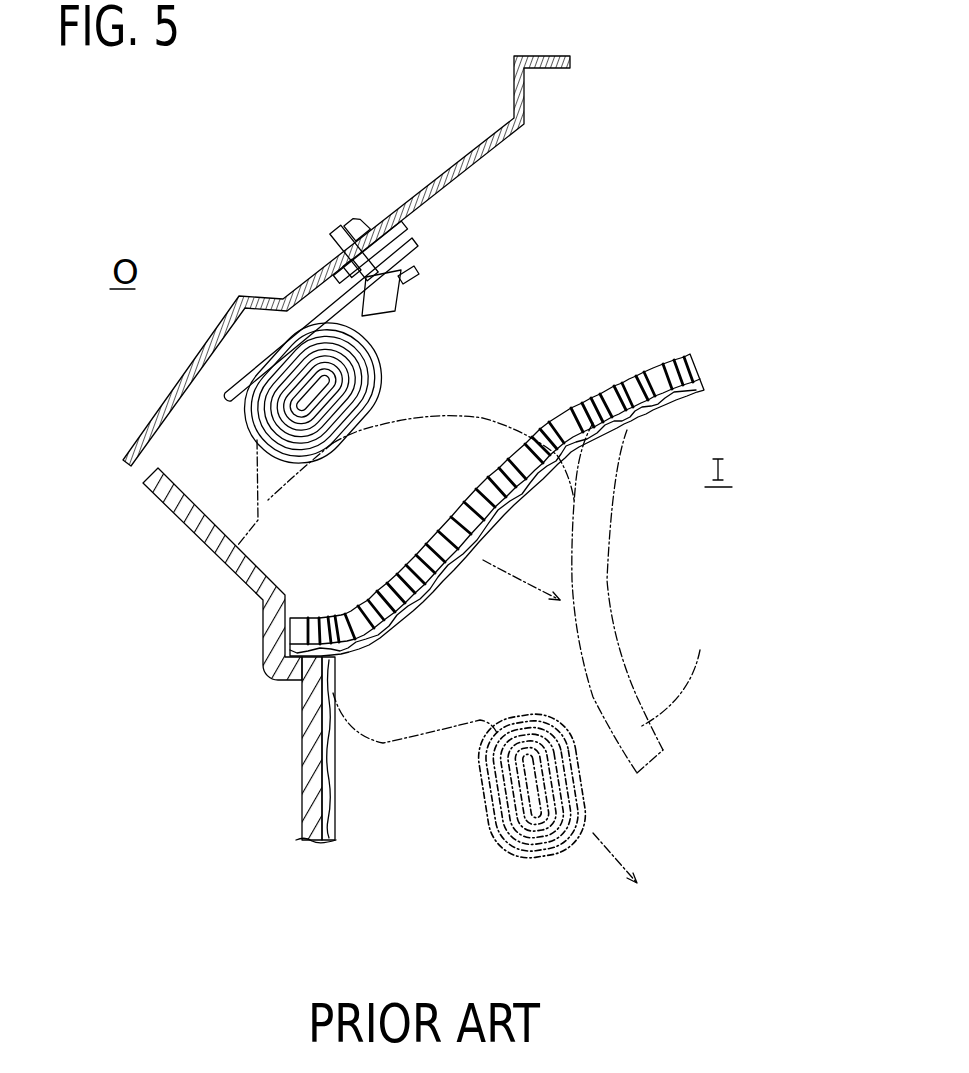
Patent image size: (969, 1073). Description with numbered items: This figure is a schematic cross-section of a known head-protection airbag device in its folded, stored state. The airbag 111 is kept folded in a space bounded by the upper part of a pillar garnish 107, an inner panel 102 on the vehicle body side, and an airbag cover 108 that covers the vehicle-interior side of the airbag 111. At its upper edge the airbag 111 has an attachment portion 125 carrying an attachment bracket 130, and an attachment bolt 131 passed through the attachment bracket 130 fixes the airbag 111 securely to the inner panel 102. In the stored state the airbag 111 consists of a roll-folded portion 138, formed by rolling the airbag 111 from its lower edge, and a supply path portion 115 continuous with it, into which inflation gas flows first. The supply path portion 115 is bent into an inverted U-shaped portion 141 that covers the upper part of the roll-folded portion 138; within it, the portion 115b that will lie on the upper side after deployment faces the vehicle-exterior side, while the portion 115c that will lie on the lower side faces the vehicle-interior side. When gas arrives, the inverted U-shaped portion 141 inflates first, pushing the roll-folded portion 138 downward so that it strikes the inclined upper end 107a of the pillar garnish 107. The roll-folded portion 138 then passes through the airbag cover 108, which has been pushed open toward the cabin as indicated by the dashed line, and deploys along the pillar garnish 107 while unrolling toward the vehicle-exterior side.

The inner panel 102 is at (465, 156).
The attachment bolt 131 is at (337, 226).
The supply path portion 115 is at (302, 223).
The portion located on the upper side when inflation and deployment are completed 115b is at (276, 335).
The portion located on the lower side when inflation and deployment are completed 115c is at (335, 459).
The attachment portion 125 is at (410, 228).
The attachment bracket 130 is at (410, 252).
The airbag 111 is at (413, 338).
The roll-folded portion 138 is at (242, 440).
The inverted U-shaped portion 141 is at (384, 406).
The pillar garnish 107 is at (239, 655).
The inclined upper end 107a is at (226, 552).
The airbag cover 108 is at (398, 624).